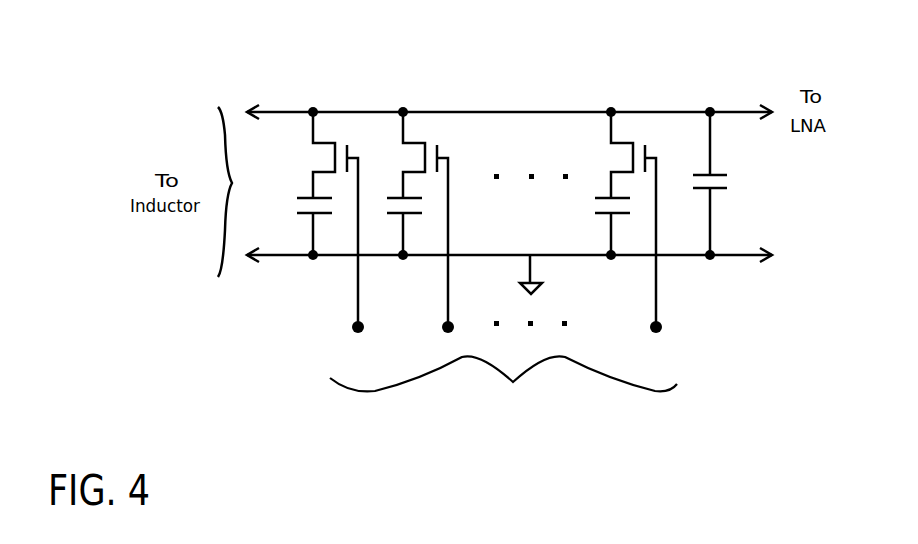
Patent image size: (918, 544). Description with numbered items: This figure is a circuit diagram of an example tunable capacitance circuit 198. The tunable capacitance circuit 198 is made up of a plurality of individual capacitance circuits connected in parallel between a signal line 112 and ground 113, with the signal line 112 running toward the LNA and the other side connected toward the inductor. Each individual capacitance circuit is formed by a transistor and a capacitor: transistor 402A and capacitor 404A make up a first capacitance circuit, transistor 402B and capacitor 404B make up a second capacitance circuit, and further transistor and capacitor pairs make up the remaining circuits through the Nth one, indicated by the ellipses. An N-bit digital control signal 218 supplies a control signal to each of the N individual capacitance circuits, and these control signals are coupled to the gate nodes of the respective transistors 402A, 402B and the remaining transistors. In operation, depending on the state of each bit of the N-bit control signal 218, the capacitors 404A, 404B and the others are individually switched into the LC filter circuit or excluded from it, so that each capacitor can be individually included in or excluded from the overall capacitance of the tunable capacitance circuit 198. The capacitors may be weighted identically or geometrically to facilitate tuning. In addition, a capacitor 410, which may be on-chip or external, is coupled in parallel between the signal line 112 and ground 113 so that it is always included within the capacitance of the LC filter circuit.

The tunable capacitance circuit 198 is at (542, 87).
The transistor 402A is at (318, 145).
The transistor 402B is at (408, 145).
The capacitor 404A is at (295, 215).
The capacitor 404B is at (385, 215).
The capacitor 410 is at (716, 190).
The signal line 112 is at (693, 108).
The ground 113 is at (540, 284).
The N-bit digital control signal 218 is at (697, 375).